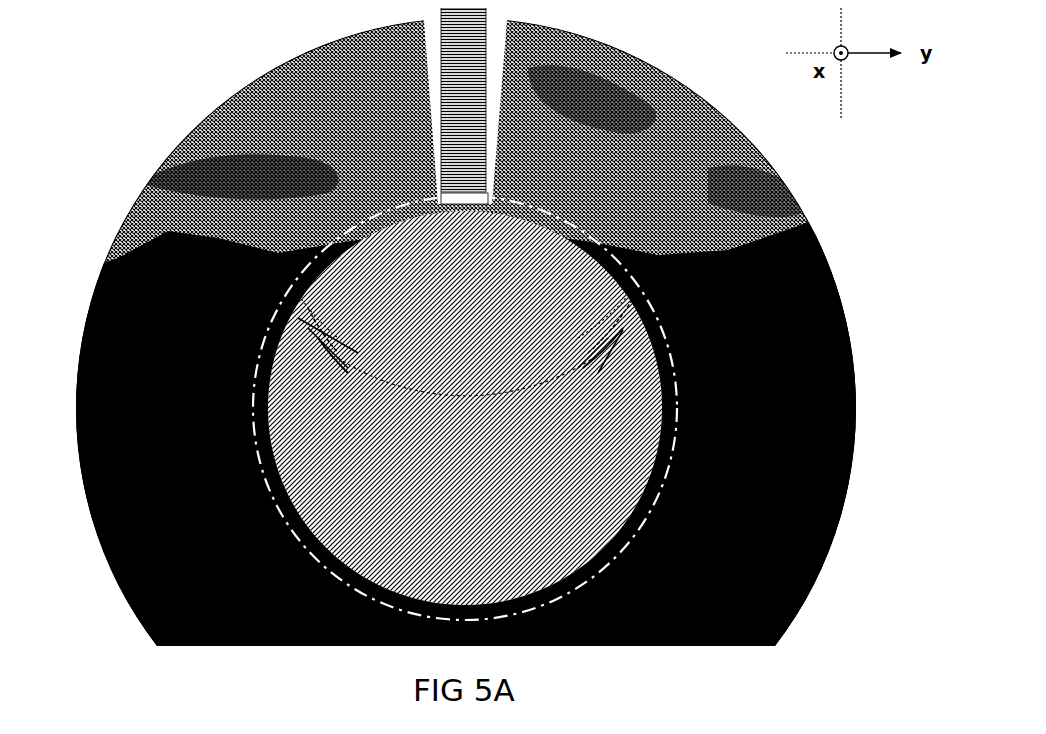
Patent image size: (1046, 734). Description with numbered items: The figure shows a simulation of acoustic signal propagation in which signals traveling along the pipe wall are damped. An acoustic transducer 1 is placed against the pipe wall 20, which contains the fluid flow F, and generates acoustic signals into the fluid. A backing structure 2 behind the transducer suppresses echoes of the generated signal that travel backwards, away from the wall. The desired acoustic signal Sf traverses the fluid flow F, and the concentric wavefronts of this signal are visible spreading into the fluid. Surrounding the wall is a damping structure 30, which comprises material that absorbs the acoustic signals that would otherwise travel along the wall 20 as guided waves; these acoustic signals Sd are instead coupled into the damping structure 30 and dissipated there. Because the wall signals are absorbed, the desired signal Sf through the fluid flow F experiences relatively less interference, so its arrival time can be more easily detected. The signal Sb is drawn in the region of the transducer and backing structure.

The acoustic transducer 1 is at (443, 180).
The backing structure 2 is at (455, 125).
The pipe wall 20 is at (240, 398).
The damping structure 30 is at (137, 325).
The beam / bar region Sb is at (452, 34).
The acoustic signals coupled into the damping structure Sd is at (225, 183).
The desired acoustic signal Sf is at (323, 347).
The fluid flow F is at (466, 462).